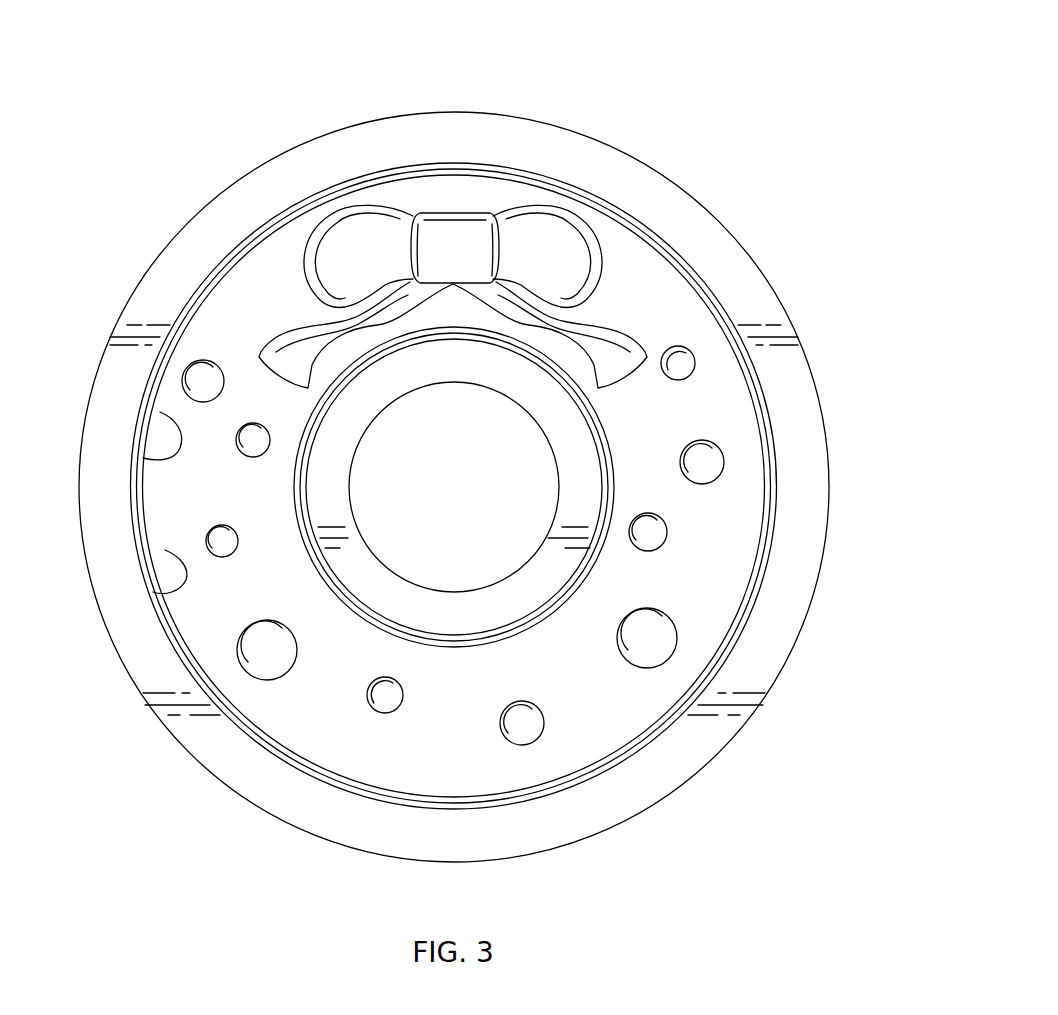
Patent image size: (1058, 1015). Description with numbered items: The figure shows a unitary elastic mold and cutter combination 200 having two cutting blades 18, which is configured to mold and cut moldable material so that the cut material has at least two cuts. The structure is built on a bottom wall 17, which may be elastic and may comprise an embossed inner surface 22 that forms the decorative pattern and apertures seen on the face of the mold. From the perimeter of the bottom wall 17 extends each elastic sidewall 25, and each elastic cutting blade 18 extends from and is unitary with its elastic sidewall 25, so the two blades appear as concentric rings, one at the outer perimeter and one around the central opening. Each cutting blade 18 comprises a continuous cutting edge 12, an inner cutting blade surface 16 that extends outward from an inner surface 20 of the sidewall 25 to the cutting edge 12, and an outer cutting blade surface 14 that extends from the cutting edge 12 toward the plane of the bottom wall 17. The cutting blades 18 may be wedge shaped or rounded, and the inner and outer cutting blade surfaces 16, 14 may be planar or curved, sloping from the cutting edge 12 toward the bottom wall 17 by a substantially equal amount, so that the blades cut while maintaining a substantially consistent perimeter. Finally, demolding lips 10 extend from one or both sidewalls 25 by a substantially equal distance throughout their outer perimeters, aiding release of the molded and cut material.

The unitary elastic mold and cutter combination 200 is at (766, 114).
The demolding lip 10 is at (712, 250).
The continuous cutting edge 12 is at (314, 194).
The outer cutting blade surface 14 is at (186, 297).
The inner cutting blade surface 16 is at (230, 264).
The bottom wall 17 is at (501, 778).
The cutting blade 18 is at (489, 338).
The inner surface of sidewall 20 is at (153, 592).
The embossed inner surface 22 is at (380, 714).
The elastic sidewall 25 is at (143, 458).